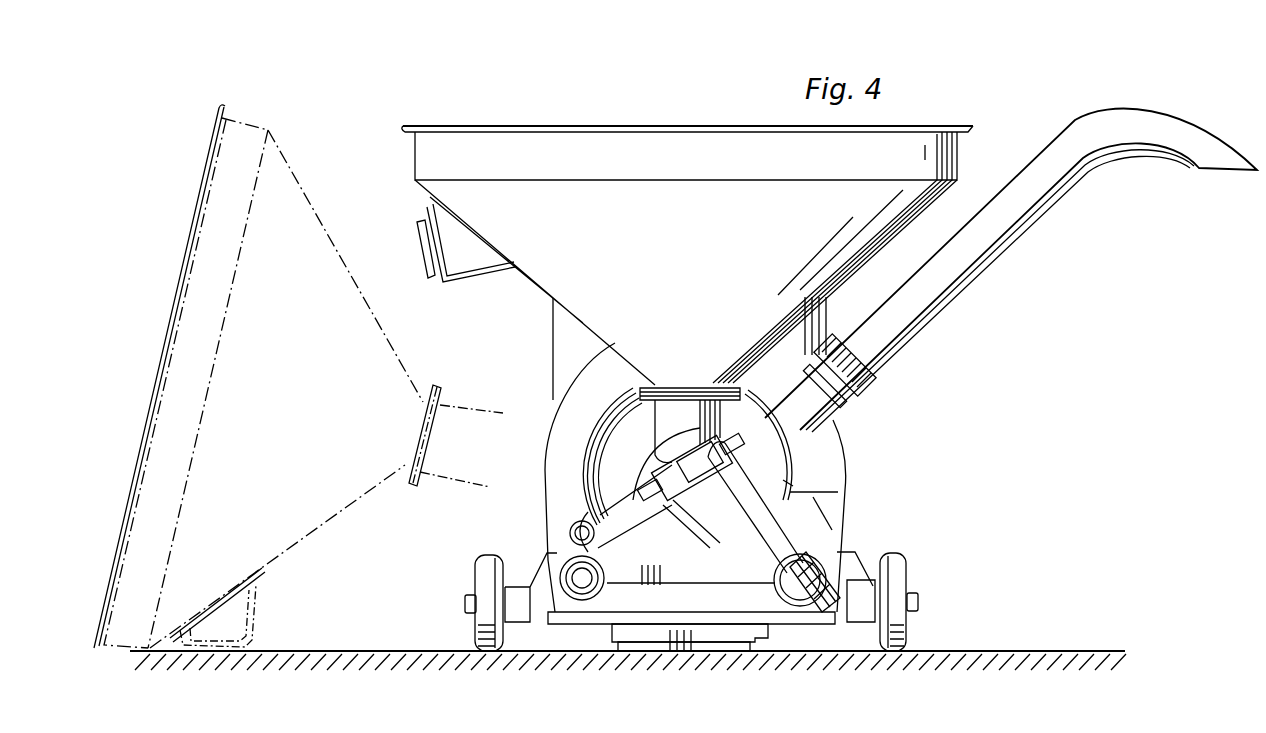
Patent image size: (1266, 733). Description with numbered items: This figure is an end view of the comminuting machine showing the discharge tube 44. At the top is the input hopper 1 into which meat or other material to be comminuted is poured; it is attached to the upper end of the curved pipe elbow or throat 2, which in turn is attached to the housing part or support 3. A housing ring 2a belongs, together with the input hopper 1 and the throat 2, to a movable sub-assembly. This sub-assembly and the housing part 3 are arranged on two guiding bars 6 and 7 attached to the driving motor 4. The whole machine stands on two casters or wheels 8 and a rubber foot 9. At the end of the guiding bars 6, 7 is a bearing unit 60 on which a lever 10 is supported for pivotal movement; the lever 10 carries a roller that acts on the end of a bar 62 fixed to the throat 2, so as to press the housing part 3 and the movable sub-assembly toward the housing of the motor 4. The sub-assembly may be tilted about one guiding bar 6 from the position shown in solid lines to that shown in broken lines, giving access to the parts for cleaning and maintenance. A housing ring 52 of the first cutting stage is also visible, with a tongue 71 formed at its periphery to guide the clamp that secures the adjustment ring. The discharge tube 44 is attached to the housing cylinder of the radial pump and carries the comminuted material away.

The input hopper 1 is at (559, 140).
The curved pipe elbow or throat 2 is at (455, 422).
The housing ring 2a is at (618, 448).
The housing part or support 3 is at (838, 492).
The driving motor 4 is at (838, 466).
The guiding bar 6 is at (592, 575).
The guiding bar 7 is at (790, 583).
The casters or wheels 8 is at (482, 572).
The rubber foot 9 is at (640, 641).
The lever 10 is at (822, 613).
The discharge tube 44 is at (957, 280).
The housing ring 52 is at (593, 493).
The bearing unit 60 is at (800, 533).
The bar 62 is at (673, 458).
The tongue 71 is at (783, 480).